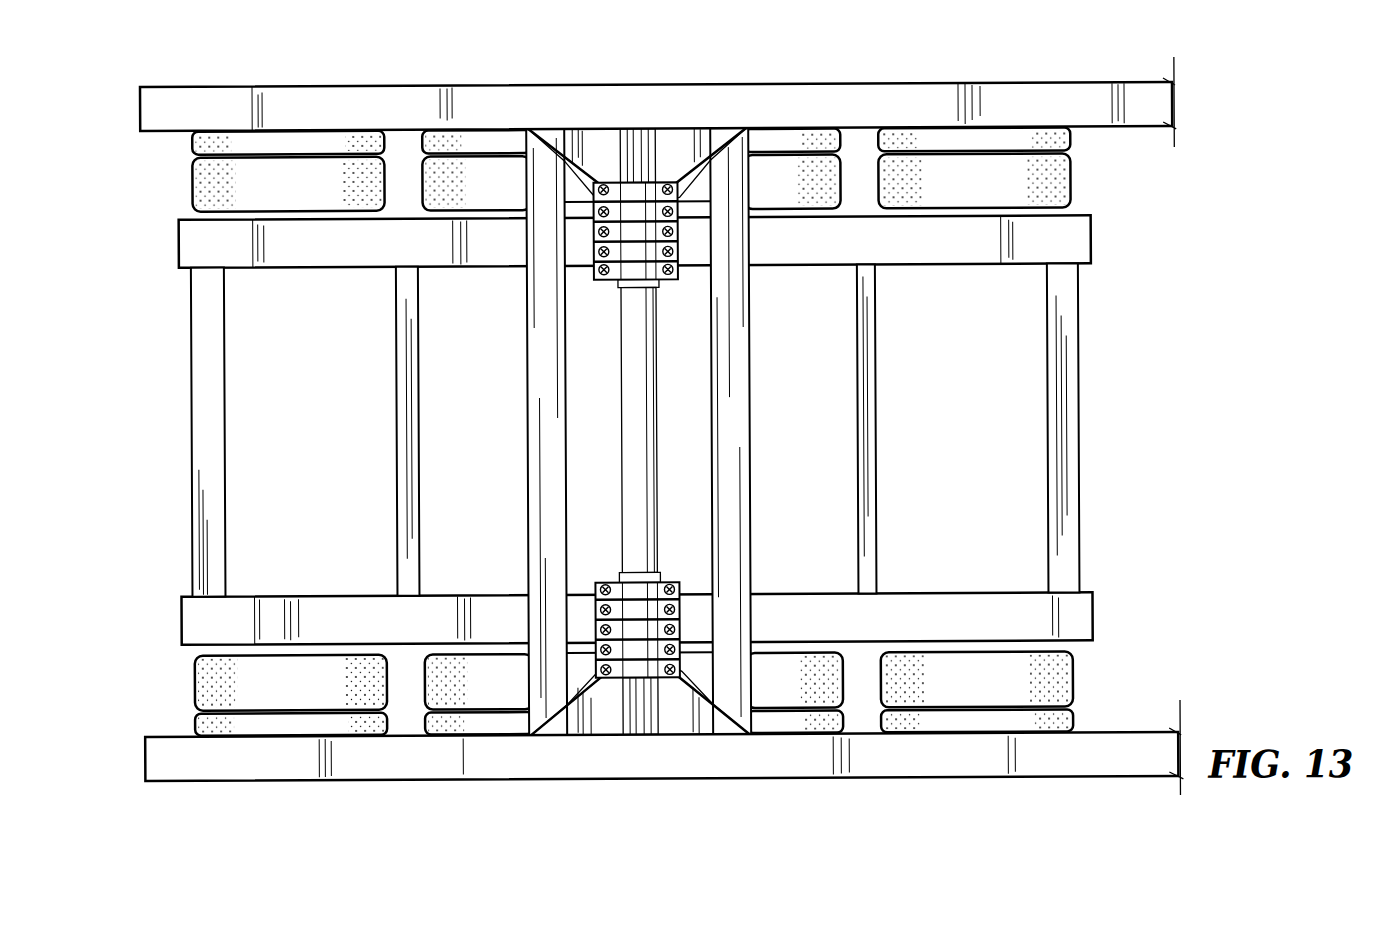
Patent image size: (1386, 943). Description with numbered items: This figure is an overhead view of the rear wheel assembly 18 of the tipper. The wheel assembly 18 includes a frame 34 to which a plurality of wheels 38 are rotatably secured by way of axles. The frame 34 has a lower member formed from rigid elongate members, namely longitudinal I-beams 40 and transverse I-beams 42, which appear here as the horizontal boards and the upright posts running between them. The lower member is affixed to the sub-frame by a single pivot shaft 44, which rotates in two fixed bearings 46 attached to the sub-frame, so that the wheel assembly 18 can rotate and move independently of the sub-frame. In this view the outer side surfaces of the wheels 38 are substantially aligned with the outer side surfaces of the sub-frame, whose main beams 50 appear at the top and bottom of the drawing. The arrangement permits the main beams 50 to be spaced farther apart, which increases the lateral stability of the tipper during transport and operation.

The wheel assembly 18 is at (611, 430).
The frame 34 is at (166, 658).
The wheels 38 is at (442, 141).
The longitudinal I-beams 40 is at (291, 263).
The transverse I-beams 42 is at (203, 347).
The pivot shaft 44 is at (643, 328).
The fixed bearings 46 is at (632, 218).
The main beams 50 is at (235, 104).